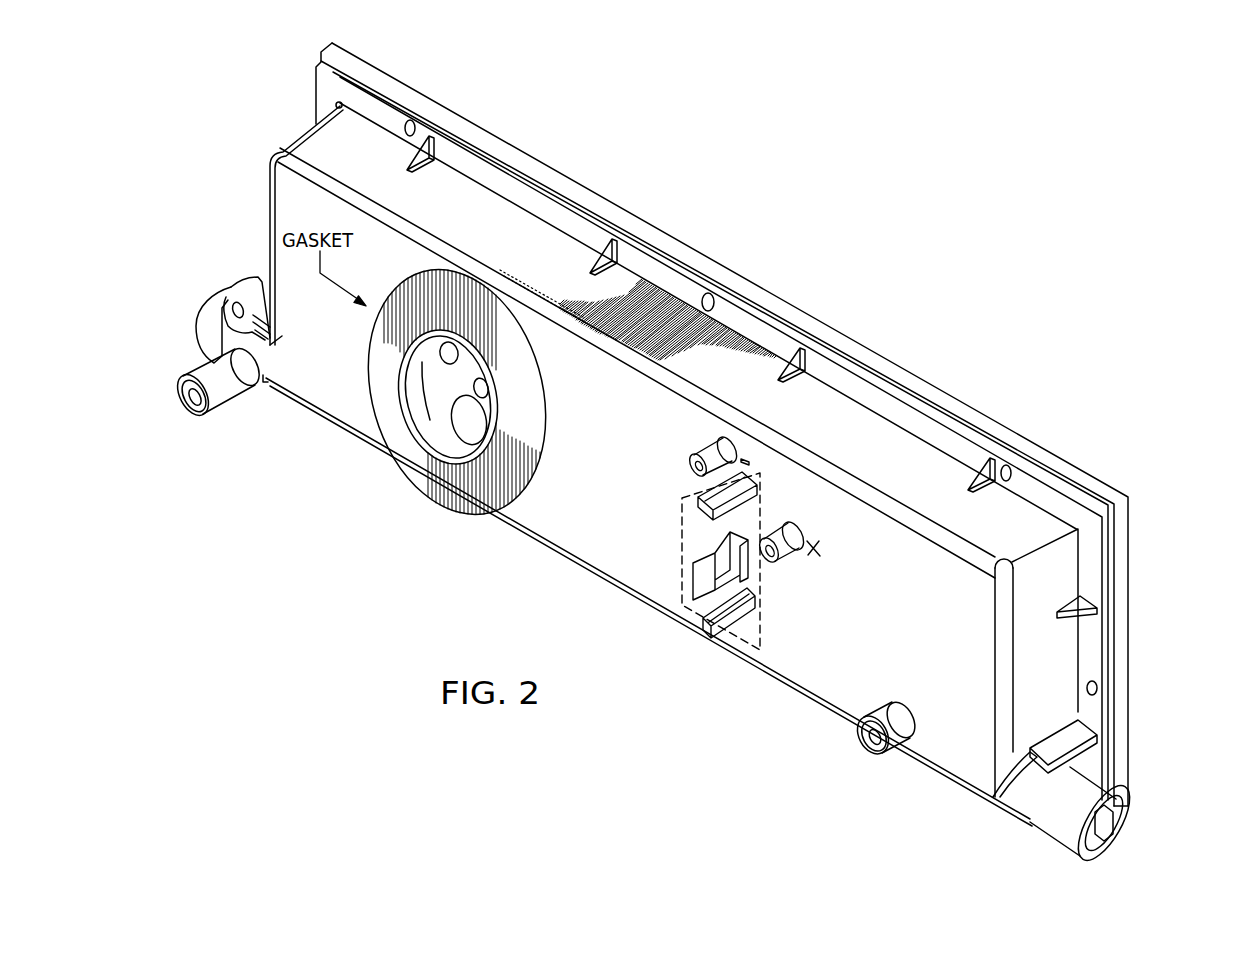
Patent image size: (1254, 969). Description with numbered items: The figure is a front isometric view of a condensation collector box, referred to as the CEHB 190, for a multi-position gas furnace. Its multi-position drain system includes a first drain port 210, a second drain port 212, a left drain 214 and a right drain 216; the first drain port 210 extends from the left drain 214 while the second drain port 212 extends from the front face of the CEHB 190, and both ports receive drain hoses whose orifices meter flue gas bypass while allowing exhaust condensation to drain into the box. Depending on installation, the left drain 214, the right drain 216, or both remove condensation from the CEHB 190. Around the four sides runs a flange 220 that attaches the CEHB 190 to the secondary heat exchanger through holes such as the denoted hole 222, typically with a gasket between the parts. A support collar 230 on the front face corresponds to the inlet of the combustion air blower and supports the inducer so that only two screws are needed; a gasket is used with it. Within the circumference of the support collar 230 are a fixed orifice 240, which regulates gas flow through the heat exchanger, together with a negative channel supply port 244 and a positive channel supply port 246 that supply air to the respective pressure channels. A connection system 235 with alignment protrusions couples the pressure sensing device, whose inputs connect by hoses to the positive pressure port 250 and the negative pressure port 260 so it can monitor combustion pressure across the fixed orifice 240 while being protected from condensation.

The CEHB 190 is at (536, 621).
The first drain port 210 is at (188, 417).
The second drain port 212 is at (869, 752).
The left drain 214 is at (200, 306).
The right drain 216 is at (1130, 818).
The flange 220 is at (1068, 472).
The hole 222 is at (410, 120).
The support collar 230 is at (410, 428).
The connection system 235 is at (678, 528).
The fixed orifice 240 is at (452, 415).
The negative channel supply port 244 is at (428, 352).
The positive channel supply port 246 is at (490, 398).
The positive pressure port 250 is at (781, 555).
The negative pressure port 260 is at (691, 469).